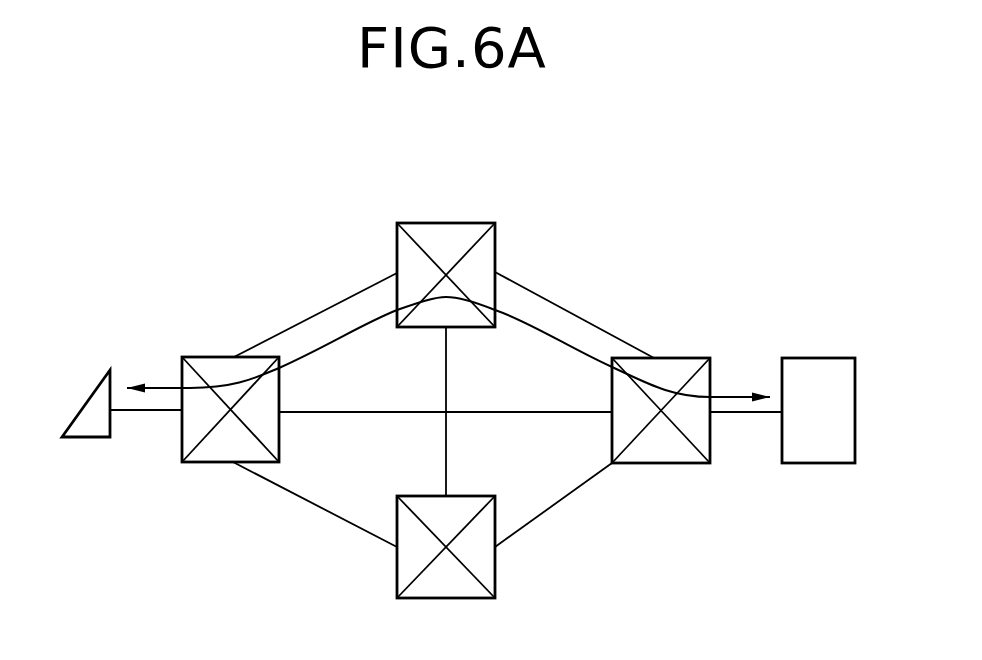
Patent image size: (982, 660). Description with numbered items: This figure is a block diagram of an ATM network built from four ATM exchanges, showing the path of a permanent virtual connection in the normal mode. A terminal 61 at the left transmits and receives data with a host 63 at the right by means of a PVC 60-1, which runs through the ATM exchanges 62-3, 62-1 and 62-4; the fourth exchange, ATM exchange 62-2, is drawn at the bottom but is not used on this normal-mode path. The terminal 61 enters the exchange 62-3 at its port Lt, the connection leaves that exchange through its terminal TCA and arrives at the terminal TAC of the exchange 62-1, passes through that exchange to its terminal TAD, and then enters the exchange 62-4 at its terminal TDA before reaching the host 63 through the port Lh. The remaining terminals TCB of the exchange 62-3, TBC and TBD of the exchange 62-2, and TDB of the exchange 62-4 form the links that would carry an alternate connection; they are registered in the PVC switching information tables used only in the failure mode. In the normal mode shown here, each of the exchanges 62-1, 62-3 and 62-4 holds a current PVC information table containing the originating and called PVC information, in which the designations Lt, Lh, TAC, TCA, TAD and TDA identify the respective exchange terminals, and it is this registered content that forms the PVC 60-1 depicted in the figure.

The terminal 61 is at (99, 383).
The ATM exchange 62-1 is at (416, 222).
The ATM exchange 62-2 is at (415, 598).
The ATM exchange 62-3 is at (197, 462).
The ATM exchange 62-4 is at (695, 358).
The host 63 is at (822, 358).
The PVC 60-1 is at (548, 336).
The terminal of exchange A TAC is at (397, 272).
The terminal of exchange A TAD is at (495, 272).
The terminal of exchange C TCA is at (227, 357).
The terminal of exchange C TCB is at (230, 462).
The terminal of exchange B TBC is at (397, 550).
The terminal of exchange B TBD is at (495, 547).
The terminal of exchange D TDA is at (658, 358).
The terminal of exchange D TDB is at (662, 463).
The terminal-side port Lt is at (181, 412).
The host-side port Lh is at (710, 413).